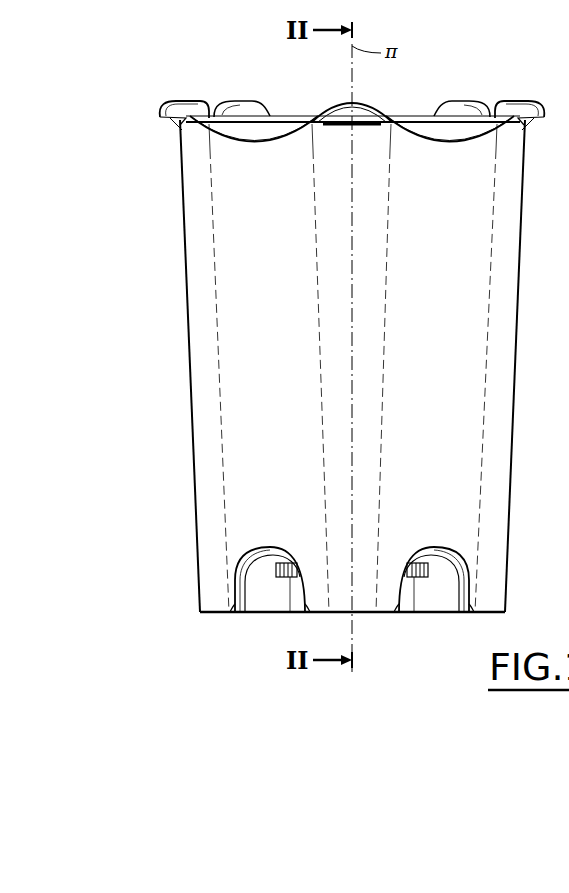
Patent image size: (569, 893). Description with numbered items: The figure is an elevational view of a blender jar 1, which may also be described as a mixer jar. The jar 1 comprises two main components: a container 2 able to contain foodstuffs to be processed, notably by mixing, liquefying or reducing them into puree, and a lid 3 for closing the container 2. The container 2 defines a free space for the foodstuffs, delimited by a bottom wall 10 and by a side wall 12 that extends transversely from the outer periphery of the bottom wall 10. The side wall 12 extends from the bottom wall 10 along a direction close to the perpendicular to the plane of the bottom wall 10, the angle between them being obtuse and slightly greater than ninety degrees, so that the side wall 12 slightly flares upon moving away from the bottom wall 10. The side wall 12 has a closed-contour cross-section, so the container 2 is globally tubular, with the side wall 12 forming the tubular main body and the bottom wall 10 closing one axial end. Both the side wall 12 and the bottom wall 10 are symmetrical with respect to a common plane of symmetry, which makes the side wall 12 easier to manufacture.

The blender jar 1 is at (112, 166).
The container 2 is at (178, 248).
The lid 3 is at (160, 112).
The bottom wall 10 is at (268, 549).
The side wall 12 is at (262, 393).